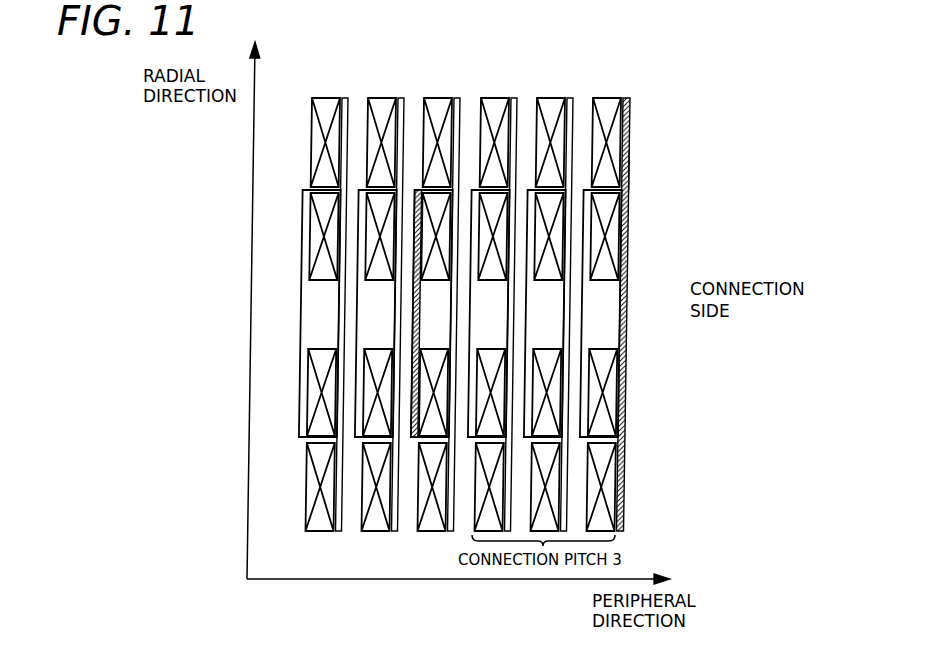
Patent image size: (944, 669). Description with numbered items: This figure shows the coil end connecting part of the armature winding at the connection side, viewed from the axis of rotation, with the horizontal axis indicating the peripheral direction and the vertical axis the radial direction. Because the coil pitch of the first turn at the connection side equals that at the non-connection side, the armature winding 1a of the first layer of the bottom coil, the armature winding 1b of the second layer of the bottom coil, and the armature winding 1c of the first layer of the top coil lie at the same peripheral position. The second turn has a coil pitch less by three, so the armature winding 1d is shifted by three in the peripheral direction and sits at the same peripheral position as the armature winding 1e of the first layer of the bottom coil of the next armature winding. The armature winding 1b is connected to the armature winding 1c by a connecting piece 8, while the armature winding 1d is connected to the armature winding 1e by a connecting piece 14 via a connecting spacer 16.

The armature winding of the first layer of the bottom coil 1a is at (434, 98).
The armature winding of the second layer of the bottom coil 1b is at (436, 198).
The armature winding of the first layer of the top coil 1c is at (434, 437).
The armature winding of the second layer of the top coil 1d is at (434, 527).
The armature winding of the first layer of the bottom coil of the next armature wind 1e is at (605, 98).
The connecting piece 8 is at (420, 191).
The connecting piece 14 is at (633, 170).
The connecting spacer 16 is at (630, 98).